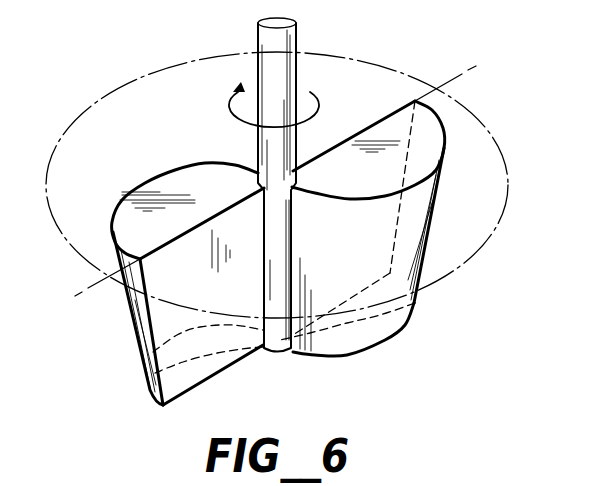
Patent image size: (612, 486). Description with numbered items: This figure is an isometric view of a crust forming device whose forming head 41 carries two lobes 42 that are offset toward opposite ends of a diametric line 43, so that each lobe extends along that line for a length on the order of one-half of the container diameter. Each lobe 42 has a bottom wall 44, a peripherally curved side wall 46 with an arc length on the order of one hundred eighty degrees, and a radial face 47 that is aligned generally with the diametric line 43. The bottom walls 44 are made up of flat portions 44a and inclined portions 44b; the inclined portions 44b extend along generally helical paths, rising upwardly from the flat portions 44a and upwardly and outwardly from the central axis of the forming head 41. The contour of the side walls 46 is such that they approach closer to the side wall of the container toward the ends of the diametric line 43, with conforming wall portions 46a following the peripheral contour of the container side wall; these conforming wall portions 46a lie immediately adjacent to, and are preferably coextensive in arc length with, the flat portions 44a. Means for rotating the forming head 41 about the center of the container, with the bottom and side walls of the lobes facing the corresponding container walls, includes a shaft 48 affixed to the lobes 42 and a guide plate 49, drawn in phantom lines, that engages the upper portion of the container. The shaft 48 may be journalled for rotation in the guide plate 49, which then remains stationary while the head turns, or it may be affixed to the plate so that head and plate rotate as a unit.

The forming head 41 is at (435, 261).
The lobe 42 is at (195, 181).
The diametric line 43 is at (459, 77).
The bottom wall 44 is at (230, 365).
The flat portion 44a is at (190, 377).
The inclined portion 44b is at (198, 345).
The peripherally curved side wall 46 is at (357, 256).
The conforming wall portion 46a is at (138, 340).
The radial face 47 is at (343, 141).
The shaft 48 is at (267, 31).
The guide plate 49 is at (395, 71).